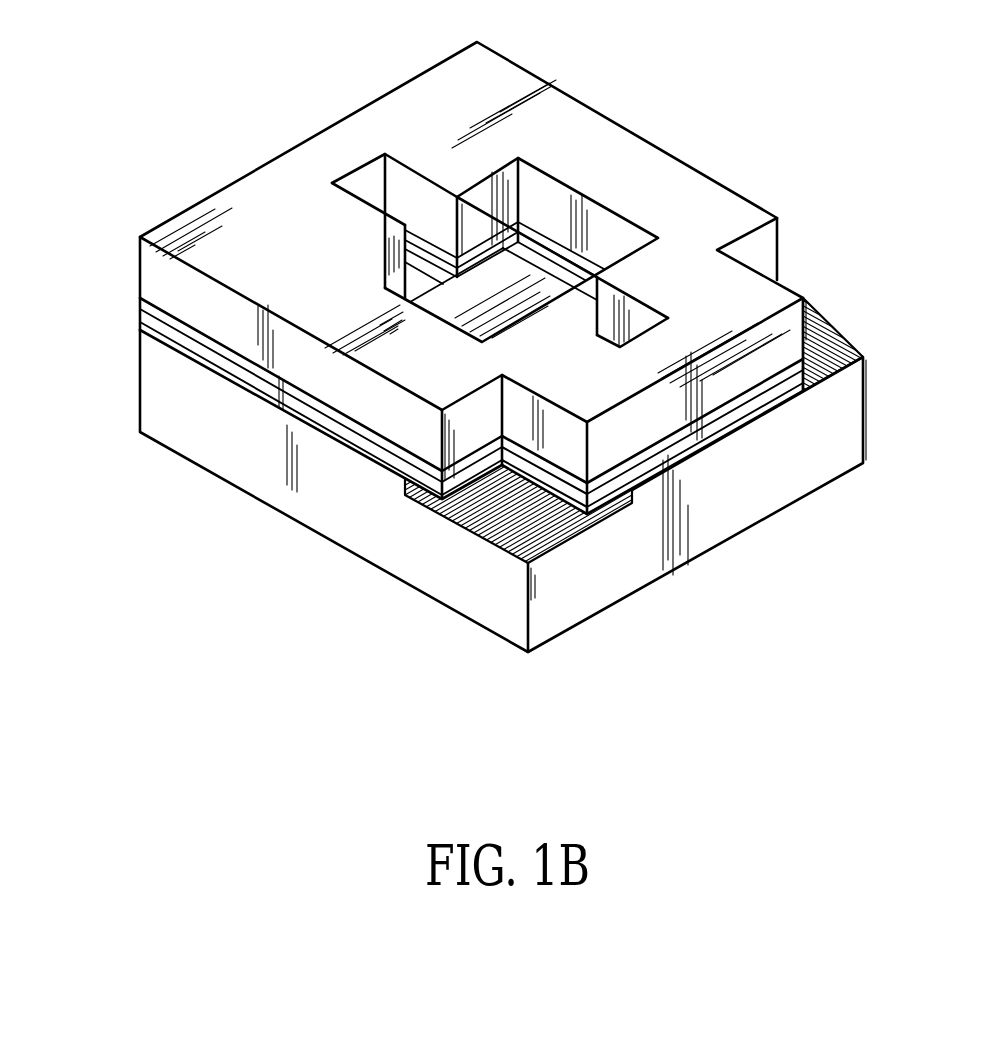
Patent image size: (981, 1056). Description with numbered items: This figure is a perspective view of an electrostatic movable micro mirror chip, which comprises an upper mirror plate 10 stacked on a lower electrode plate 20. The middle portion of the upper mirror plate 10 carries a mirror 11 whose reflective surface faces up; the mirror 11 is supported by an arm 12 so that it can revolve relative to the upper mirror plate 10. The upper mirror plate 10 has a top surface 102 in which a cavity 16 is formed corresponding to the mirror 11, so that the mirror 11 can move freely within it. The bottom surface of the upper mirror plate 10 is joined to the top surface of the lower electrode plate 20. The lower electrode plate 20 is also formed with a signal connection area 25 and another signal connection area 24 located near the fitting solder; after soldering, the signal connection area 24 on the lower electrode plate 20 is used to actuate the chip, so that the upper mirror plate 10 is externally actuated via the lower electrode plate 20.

The upper mirror plate 10 is at (150, 225).
The top surface 102 is at (223, 223).
The mirror 11 is at (485, 278).
The arm 12 is at (425, 262).
The cavity 16 is at (560, 213).
The lower electrode plate 20 is at (172, 454).
The signal connection area 24 is at (830, 350).
The signal connection area 25 is at (508, 522).